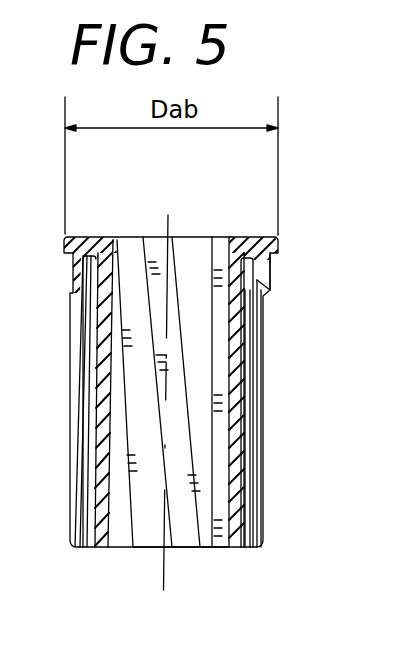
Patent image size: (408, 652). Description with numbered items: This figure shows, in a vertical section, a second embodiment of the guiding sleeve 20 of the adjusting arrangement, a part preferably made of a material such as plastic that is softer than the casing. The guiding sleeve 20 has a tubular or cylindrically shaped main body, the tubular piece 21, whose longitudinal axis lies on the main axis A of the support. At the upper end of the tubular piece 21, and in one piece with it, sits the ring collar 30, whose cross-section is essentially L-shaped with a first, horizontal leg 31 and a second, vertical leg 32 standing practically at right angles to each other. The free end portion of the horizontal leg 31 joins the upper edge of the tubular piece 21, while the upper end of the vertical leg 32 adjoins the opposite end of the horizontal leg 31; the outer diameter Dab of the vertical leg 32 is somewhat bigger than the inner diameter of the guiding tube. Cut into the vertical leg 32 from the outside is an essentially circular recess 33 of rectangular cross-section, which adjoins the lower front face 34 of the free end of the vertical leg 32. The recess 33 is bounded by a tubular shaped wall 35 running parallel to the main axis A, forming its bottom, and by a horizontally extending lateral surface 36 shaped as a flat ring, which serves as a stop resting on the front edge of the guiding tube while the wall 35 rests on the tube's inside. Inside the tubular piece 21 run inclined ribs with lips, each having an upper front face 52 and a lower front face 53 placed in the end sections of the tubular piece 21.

The guiding sleeve 20 is at (153, 230).
The tubular piece 21 is at (251, 436).
The ring collar 30 is at (90, 230).
The horizontal leg 31 is at (256, 237).
The vertical leg 32 is at (265, 380).
The recess 33 is at (262, 300).
The lower front face 34 is at (265, 320).
The tubular shaped wall 35 is at (259, 290).
The lateral surface 36 is at (272, 258).
The upper front face 52 is at (196, 236).
The lower front face 53 is at (189, 550).
The main axis A is at (150, 562).